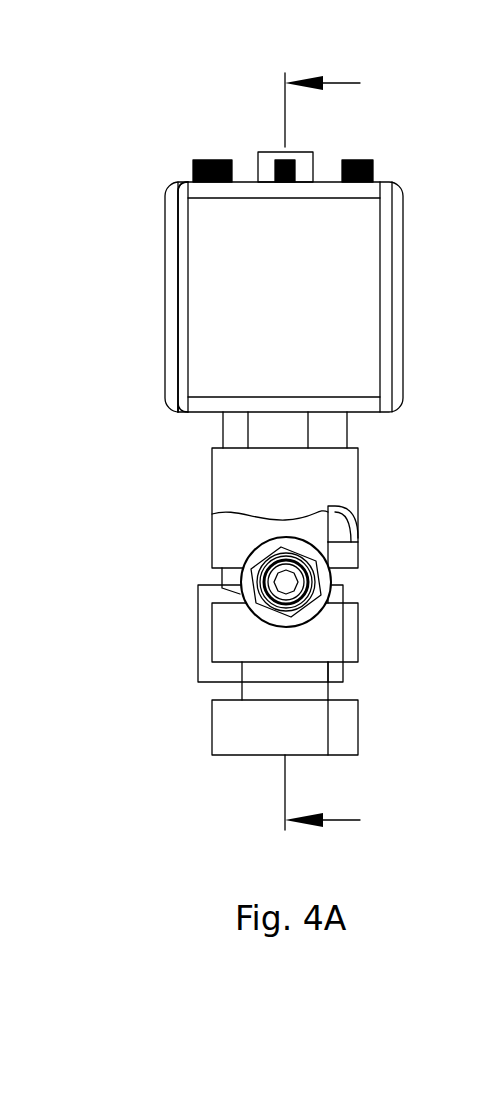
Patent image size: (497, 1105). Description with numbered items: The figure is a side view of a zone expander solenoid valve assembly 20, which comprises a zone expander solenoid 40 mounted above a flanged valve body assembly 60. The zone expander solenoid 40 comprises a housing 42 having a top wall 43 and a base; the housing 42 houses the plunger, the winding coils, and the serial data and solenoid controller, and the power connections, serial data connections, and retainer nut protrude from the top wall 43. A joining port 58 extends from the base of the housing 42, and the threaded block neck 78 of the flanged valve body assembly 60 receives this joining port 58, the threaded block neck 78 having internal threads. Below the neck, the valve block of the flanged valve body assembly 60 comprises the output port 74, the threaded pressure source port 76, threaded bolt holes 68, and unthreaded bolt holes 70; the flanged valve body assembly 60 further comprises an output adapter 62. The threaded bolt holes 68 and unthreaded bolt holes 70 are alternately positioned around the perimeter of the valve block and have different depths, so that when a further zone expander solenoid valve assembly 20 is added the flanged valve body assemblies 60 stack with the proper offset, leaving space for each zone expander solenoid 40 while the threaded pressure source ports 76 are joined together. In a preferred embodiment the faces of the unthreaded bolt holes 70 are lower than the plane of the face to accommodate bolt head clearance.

The zone expander solenoid valve assembly 20 is at (130, 77).
The zone expander solenoid 40 is at (125, 254).
The housing 42 is at (405, 232).
The top wall 43 is at (320, 182).
The joining port 58 is at (347, 428).
The flanged valve body assembly 60 is at (140, 514).
The output adapter 62 is at (297, 583).
The threaded bolt holes 68 is at (358, 555).
The unthreaded bolt holes 70 is at (212, 542).
The output port 74 is at (310, 608).
The threaded pressure source port 76 is at (200, 633).
The threaded block neck 78 is at (338, 484).